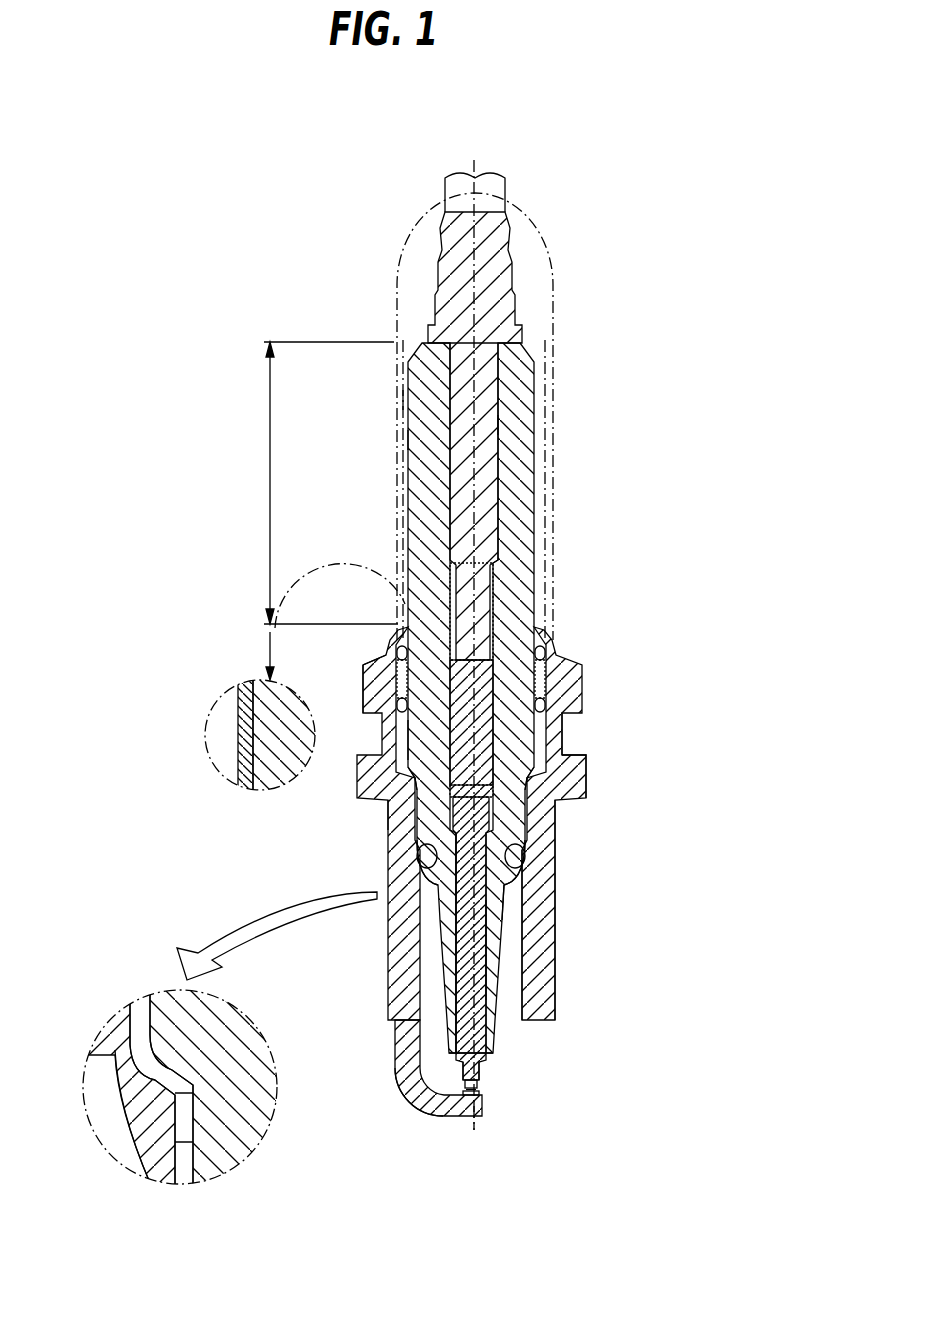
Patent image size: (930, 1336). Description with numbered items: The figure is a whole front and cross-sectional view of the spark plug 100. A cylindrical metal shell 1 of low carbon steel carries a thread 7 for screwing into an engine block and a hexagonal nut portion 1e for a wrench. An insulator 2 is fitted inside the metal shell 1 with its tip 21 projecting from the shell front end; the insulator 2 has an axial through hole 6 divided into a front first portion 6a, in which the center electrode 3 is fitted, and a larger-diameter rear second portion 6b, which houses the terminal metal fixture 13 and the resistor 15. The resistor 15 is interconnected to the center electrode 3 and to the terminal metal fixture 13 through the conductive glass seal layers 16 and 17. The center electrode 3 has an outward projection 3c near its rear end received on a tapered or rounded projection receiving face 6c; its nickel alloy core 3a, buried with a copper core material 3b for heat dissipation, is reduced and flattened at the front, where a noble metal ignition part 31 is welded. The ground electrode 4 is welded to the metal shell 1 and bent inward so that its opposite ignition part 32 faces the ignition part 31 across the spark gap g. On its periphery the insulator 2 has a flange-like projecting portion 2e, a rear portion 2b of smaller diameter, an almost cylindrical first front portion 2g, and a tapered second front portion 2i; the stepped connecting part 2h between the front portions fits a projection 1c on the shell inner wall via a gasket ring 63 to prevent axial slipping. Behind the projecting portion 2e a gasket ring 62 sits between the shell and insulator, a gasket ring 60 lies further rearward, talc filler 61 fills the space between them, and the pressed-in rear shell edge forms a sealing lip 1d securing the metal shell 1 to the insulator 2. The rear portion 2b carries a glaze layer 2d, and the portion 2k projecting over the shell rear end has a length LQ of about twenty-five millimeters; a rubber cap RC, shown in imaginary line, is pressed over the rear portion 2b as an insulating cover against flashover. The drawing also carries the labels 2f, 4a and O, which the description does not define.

The spark plug 100 is at (638, 260).
The rubber cap RC is at (540, 222).
The terminal metal fixture 13 is at (487, 381).
The insulator 2 is at (425, 362).
The portion of the insulator projecting over the rear end of the metal shell 2k is at (378, 403).
The rear portion 2b is at (407, 436).
The glaze layer 2d is at (546, 461).
The through hole 6 is at (508, 425).
The second portion of the through hole 6b is at (492, 565).
The conductive glass seal layer 17 is at (487, 657).
The first portion of the through hole 6a is at (492, 1038).
The metal shell 1 is at (385, 822).
The hexagonal nut portion 1e is at (363, 676).
The sealing lip 1d is at (392, 626).
The projecting portion 2e is at (398, 738).
The insulator flange step 2f is at (378, 808).
The gasket ring 60 is at (556, 648).
The filler 61 is at (553, 680).
The gasket ring 62 is at (553, 706).
The resistor 15 is at (578, 745).
The conductive glass seal layer 16 is at (587, 783).
The first front portion 2g is at (535, 807).
The projection receiving face 6c is at (400, 852).
The connecting part 2h is at (402, 926).
The outward projection 3c is at (513, 857).
The projection 1c is at (540, 898).
The thread 7 is at (558, 927).
The center electrode 3 is at (507, 944).
The core material 3b is at (523, 980).
The second front portion 2i is at (493, 1000).
The tip 21 is at (490, 1058).
The ignition part 31 is at (503, 1090).
The spark gap g is at (498, 1093).
The opposite ignition part 32 is at (494, 1100).
The axis O is at (475, 1133).
The ground electrode 4 is at (452, 1118).
The ground electrode bent portion 4a is at (428, 1110).
The core 3a is at (453, 1065).
The gasket ring 63 is at (110, 1148).
The length LQ is at (318, 511).